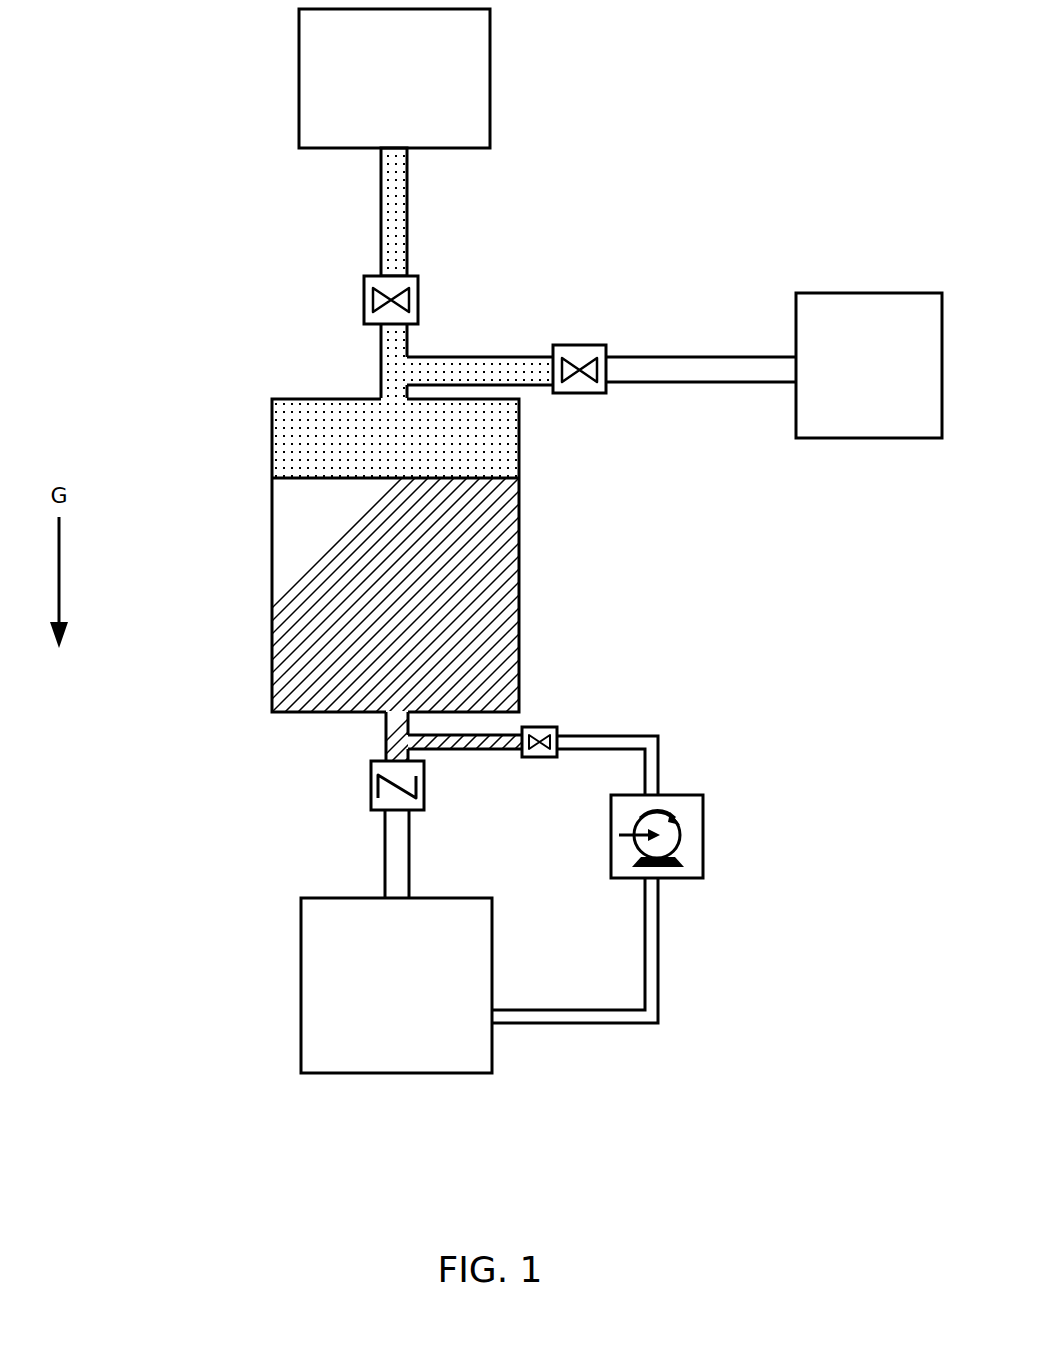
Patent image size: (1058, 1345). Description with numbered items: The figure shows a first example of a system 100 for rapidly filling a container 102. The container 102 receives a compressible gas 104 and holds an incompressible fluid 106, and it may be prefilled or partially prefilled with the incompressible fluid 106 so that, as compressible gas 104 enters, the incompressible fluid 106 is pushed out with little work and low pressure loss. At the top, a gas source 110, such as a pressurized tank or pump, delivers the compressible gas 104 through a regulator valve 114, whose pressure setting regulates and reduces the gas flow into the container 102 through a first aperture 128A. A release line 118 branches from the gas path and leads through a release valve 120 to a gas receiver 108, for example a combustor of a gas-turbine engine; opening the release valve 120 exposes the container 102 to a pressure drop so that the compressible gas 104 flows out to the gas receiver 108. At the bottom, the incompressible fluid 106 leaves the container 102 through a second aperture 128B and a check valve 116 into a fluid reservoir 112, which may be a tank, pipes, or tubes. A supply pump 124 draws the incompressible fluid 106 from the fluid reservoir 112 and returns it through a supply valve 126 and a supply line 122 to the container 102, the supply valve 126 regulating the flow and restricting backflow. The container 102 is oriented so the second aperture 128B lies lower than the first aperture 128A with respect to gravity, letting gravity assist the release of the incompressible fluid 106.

The system 100 is at (800, 1115).
The container 102 is at (520, 543).
The compressible gas 104 is at (390, 342).
The incompressible fluid 106 is at (392, 733).
The gas receiver 108 is at (797, 298).
The gas source 110 is at (298, 23).
The fluid reservoir 112 is at (301, 922).
The regulator valve 114 is at (364, 285).
The check valve 116 is at (370, 772).
The release line 118 is at (468, 357).
The release valve 120 is at (577, 347).
The supply line 122 is at (470, 749).
The supply pump 124 is at (703, 830).
The supply valve 126 is at (540, 757).
The first aperture 128A is at (390, 399).
The second aperture 128B is at (390, 712).